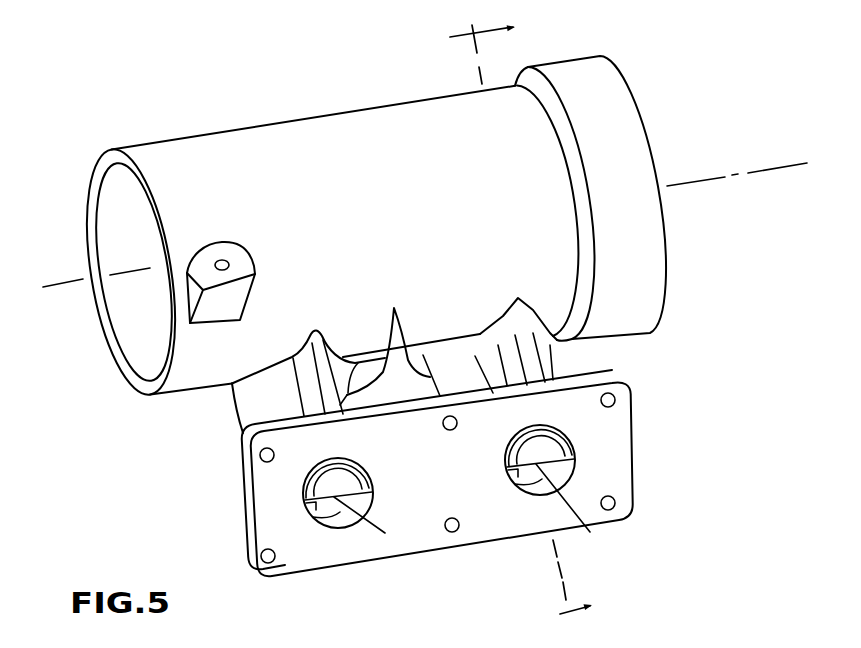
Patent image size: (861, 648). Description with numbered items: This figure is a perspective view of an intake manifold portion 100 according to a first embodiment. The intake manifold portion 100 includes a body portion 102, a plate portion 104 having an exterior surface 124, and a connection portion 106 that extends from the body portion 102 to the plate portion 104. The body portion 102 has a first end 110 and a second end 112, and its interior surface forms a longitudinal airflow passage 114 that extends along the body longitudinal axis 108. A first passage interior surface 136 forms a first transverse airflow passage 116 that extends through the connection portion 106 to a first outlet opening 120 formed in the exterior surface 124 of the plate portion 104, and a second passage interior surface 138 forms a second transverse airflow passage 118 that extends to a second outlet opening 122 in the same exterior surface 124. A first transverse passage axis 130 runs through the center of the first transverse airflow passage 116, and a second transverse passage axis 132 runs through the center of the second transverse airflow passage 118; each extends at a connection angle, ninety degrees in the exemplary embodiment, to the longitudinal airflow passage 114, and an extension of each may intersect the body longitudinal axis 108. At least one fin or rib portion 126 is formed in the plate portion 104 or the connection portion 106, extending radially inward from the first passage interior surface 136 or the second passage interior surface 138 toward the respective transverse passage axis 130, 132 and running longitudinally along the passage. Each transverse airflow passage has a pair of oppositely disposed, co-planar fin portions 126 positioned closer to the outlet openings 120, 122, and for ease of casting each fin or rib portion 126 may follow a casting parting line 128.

The intake manifold portion 100 is at (667, 52).
The body portion 102 is at (325, 110).
The plate portion 104 is at (247, 440).
The connection portion 106 is at (562, 353).
The body longitudinal axis 108 is at (767, 172).
The first end 110 is at (618, 112).
The second end 112 is at (113, 147).
The longitudinal airflow passage 114 is at (122, 218).
The first transverse airflow passage 116 is at (570, 476).
The second transverse airflow passage 118 is at (333, 518).
The first outlet opening 120 is at (567, 425).
The second outlet opening 122 is at (305, 470).
The exterior surface 124 is at (503, 430).
The fin or rib portion 126 is at (370, 490).
The casting parting line 128 is at (392, 312).
The first transverse passage axis 130 is at (540, 478).
The second transverse passage axis 132 is at (313, 497).
The first passage interior surface 136 is at (533, 493).
The second passage interior surface 138 is at (323, 525).